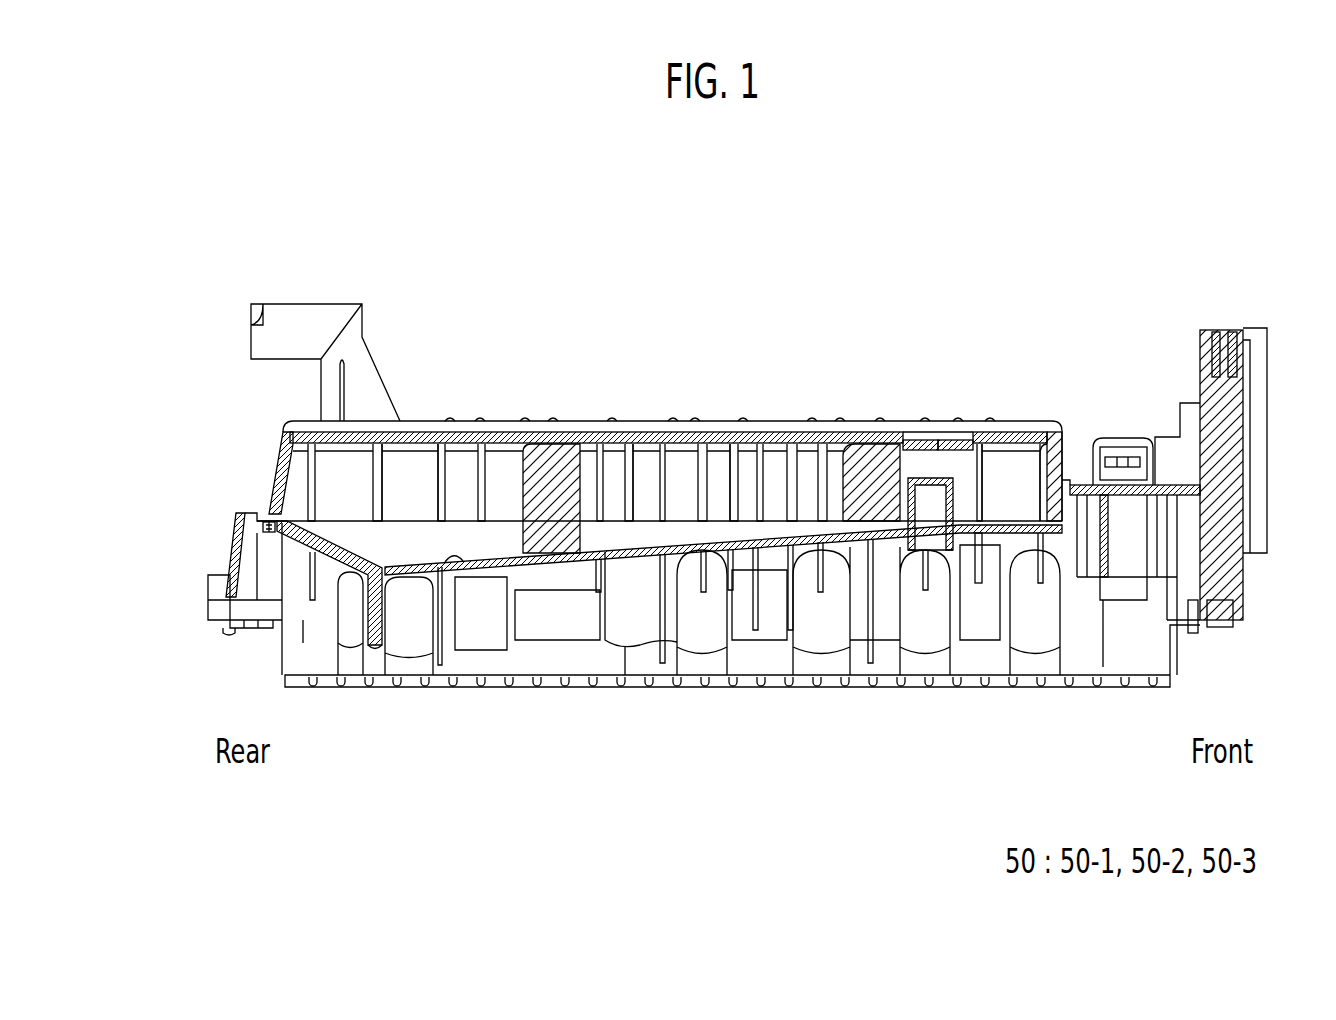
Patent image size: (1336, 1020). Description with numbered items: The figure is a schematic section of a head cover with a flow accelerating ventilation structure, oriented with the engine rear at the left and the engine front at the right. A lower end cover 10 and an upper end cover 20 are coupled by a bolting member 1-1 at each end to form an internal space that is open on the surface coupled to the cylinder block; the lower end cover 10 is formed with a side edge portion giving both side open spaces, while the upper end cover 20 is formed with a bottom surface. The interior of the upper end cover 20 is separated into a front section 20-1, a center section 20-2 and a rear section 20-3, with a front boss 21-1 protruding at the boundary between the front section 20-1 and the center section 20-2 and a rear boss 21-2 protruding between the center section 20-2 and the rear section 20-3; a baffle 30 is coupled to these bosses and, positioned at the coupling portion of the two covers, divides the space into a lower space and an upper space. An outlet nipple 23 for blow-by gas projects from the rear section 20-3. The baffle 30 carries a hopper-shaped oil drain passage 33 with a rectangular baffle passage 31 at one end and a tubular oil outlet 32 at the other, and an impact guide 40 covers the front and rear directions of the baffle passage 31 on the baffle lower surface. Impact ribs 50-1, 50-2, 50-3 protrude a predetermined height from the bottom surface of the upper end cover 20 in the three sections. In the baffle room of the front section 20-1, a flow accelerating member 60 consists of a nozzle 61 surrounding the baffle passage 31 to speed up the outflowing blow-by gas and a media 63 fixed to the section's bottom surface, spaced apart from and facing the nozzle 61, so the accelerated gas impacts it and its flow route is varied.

The lower end cover 10 is at (295, 607).
The bolting member 1-1 is at (228, 633).
The upper end cover 20 is at (292, 485).
The front section 20-1 is at (1037, 505).
The center section 20-2 is at (714, 505).
The rear section 20-3 is at (437, 505).
The front boss 21-1 is at (873, 485).
The rear boss 21-2 is at (567, 555).
The outlet nipple 23 is at (290, 323).
The baffle 30 is at (290, 552).
The baffle passage 31 is at (933, 535).
The oil outlet 32 is at (377, 648).
The oil drain passage 33 is at (467, 565).
The impact guide 40 is at (977, 540).
The impact rib 50-1 is at (975, 443).
The impact rib 50-2 is at (632, 445).
The impact rib 50-3 is at (482, 445).
The flow accelerating member 60 is at (970, 288).
The nozzle 61 is at (948, 447).
The media 63 is at (915, 440).